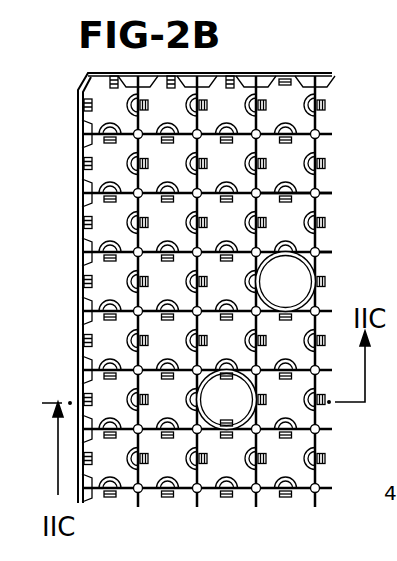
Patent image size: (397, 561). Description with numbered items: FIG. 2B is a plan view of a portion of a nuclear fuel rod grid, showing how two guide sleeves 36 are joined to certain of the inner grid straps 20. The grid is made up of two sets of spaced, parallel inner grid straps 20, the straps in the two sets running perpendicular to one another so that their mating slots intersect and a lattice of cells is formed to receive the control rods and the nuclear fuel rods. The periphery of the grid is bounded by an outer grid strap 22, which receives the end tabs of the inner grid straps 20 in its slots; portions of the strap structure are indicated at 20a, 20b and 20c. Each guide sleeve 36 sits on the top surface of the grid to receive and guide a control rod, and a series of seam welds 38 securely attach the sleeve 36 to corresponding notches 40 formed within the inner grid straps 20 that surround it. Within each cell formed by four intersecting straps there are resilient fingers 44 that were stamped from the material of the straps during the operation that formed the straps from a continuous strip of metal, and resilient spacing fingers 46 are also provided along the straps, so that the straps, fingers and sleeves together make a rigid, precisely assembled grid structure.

The inner grid strap 20 is at (93, 263).
The side wall 20a is at (92, 301).
The partition wall 20b is at (333, 147).
The end wall 20c is at (322, 257).
The outer grid strap 22 is at (203, 76).
The guide sleeve 36 is at (315, 251).
The seam weld 38 is at (272, 247).
The notch 40 is at (227, 368).
The resilient finger 44 is at (290, 78).
The resilient spacing finger 46 is at (300, 103).